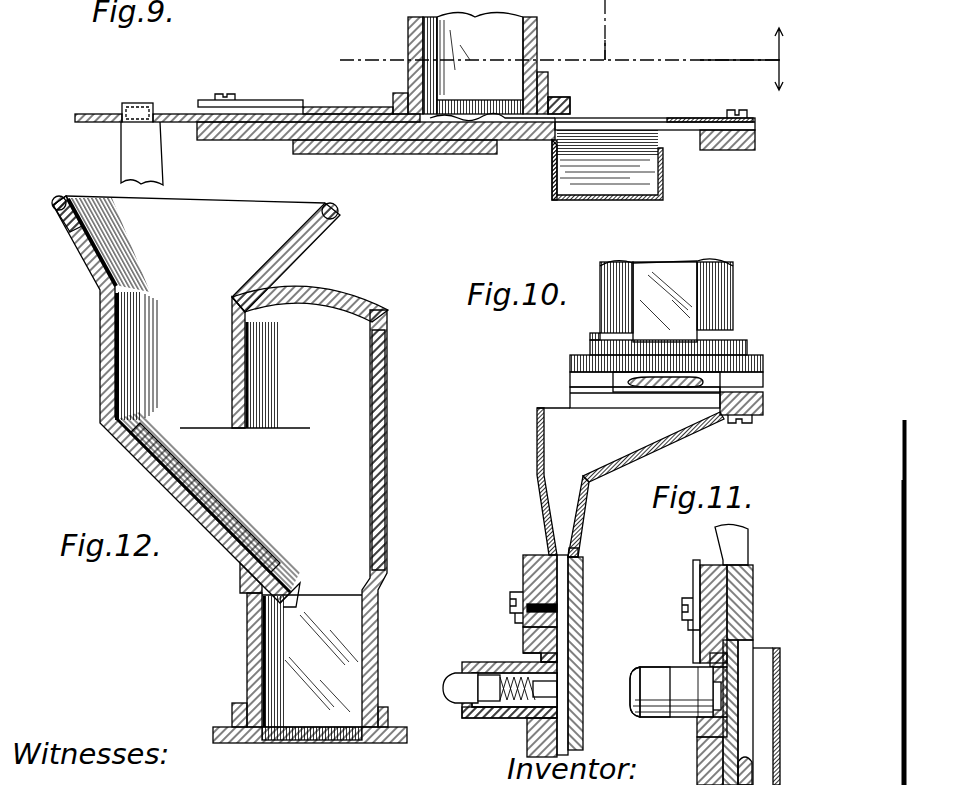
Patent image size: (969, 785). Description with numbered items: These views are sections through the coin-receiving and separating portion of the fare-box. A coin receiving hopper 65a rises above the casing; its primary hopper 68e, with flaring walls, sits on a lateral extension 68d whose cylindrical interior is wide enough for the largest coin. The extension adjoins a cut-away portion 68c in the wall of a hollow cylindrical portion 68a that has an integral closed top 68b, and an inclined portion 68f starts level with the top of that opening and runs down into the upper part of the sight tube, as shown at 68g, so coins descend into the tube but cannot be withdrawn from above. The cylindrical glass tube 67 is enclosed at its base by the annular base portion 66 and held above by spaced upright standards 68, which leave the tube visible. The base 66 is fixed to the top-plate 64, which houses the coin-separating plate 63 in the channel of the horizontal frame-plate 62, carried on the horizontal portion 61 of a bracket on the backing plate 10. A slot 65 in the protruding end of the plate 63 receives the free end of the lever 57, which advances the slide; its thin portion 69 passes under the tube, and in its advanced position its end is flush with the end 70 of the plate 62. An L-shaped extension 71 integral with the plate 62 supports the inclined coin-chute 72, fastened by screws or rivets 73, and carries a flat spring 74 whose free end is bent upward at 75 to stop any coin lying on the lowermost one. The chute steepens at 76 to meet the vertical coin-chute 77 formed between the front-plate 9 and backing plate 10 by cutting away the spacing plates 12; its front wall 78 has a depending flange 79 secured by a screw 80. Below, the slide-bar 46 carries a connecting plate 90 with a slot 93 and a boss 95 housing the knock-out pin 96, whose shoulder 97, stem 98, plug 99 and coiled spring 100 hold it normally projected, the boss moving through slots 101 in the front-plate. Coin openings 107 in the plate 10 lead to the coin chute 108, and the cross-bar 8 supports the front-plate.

In FIG. 9, the cross-bar 8 is at (788, 59).
In FIG. 9, the front-plate 9 is at (695, 30).
In FIG. 10, the front-plate 9 is at (540, 555).
In FIG. 11, the front-plate 9 is at (727, 577).
In FIG. 10, the backing plate 10 is at (586, 566).
In FIG. 11, the backing plate 10 is at (755, 567).
In FIG. 9, the spacing plates 12 is at (740, 30).
In FIG. 10, the spacing plates 12 is at (568, 582).
In FIG. 11, the spacing plates 12 is at (754, 592).
In FIG. 10, the slide-bar 46 is at (524, 638).
In FIG. 11, the slide-bar 46 is at (740, 660).
In FIG. 9, the lever 57 is at (125, 153).
In FIG. 9, the horizontal portion of bracket 61 is at (402, 155).
In FIG. 9, the horizontal frame-plate 62 is at (262, 141).
In FIG. 10, the horizontal frame-plate 62 is at (570, 385).
In FIG. 9, the coin-separating plate 63 is at (187, 113).
In FIG. 9, the top-plate 64 is at (266, 107).
In FIG. 10, the top-plate 64 is at (763, 380).
In FIG. 9, the slot 65 is at (148, 104).
In FIG. 12, the coin receiving hopper 65a is at (432, 426).
In FIG. 9, the annular base portion 66 is at (573, 110).
In FIG. 12, the annular base portion 66 is at (215, 727).
In FIG. 10, the annular base portion 66 is at (757, 357).
In FIG. 9, the glass tube 67 is at (410, 34).
In FIG. 12, the glass tube 67 is at (247, 636).
In FIG. 10, the glass tube 67 is at (665, 263).
In FIG. 10, the upright standards 68 is at (617, 262).
In FIG. 12, the hollow cylindrical portion 68a is at (389, 362).
In FIG. 12, the closed top 68b is at (336, 287).
In FIG. 12, the cut-away portion 68c is at (235, 485).
In FIG. 12, the lateral extension 68d is at (100, 370).
In FIG. 12, the primary hopper 68e is at (72, 226).
In FIG. 12, the inclined portion 68f is at (168, 501).
In FIG. 12, the lower end of inclined portion 68g is at (292, 580).
In FIG. 9, the thin portion of slide 69 is at (329, 112).
In FIG. 9, the end of bottom plate 70 is at (553, 158).
In FIG. 9, the L-shaped extension 71 is at (737, 151).
In FIG. 10, the L-shaped extension 71 is at (763, 402).
In FIG. 9, the inclined coin-chute 72 is at (577, 195).
In FIG. 10, the inclined coin-chute 72 is at (674, 439).
In FIG. 10, the screws or rivets 73 is at (751, 422).
In FIG. 9, the flat spring 74 is at (641, 121).
In FIG. 10, the flat spring 74 is at (697, 382).
In FIG. 9, the upwardly bent end of spring 75 is at (518, 118).
In FIG. 10, the nearly vertical portion of chute 76 is at (583, 520).
In FIG. 11, the nearly vertical portion of chute 76 is at (748, 540).
In FIG. 10, the vertical coin-chute 77 is at (574, 557).
In FIG. 10, the front wall 78 is at (538, 447).
In FIG. 10, the depending flange 79 is at (515, 620).
In FIG. 11, the depending flange 79 is at (696, 635).
In FIG. 10, the screw 80 is at (522, 562).
In FIG. 11, the screw 80 is at (682, 603).
In FIG. 10, the connecting plate 90 is at (523, 655).
In FIG. 11, the connecting plate 90 is at (710, 660).
In FIG. 11, the slot 93 is at (718, 690).
In FIG. 10, the boss 95 is at (460, 677).
In FIG. 11, the boss 95 is at (637, 715).
In FIG. 10, the knock-out pin 96 is at (468, 692).
In FIG. 11, the knock-out pin 96 is at (633, 700).
In FIG. 10, the shoulder 97 is at (478, 718).
In FIG. 10, the stem 98 is at (557, 690).
In FIG. 10, the plug 99 is at (557, 678).
In FIG. 10, the coiled spring 100 is at (504, 712).
In FIG. 10, the slots 101 is at (527, 742).
In FIG. 11, the slots 101 is at (698, 728).
In FIG. 11, the coin openings 107 is at (742, 680).
In FIG. 11, the coin chute 108 is at (779, 742).